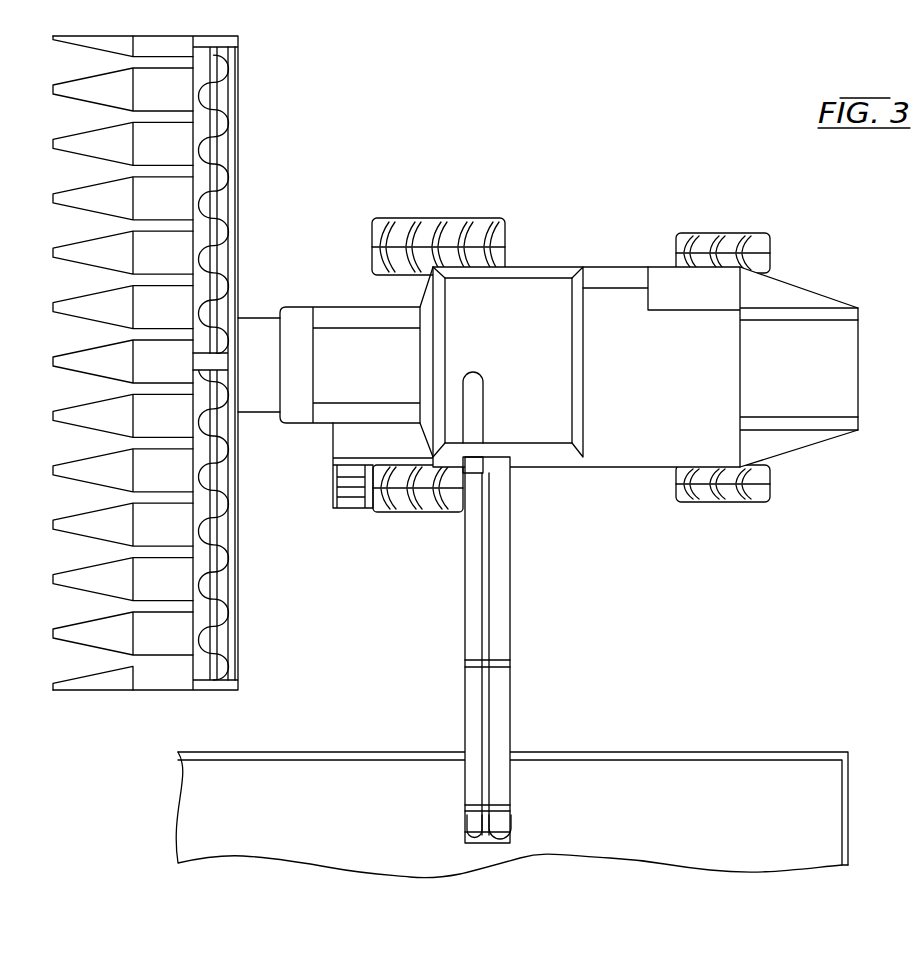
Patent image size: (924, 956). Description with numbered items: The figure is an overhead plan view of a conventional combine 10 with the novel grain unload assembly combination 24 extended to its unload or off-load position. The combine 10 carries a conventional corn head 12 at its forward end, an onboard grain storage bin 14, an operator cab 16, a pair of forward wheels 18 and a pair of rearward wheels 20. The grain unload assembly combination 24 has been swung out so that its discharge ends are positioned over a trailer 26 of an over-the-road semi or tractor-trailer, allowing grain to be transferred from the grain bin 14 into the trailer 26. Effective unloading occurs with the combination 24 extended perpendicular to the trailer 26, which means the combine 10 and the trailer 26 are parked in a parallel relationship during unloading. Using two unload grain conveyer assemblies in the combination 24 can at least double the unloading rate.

The combine 10 is at (517, 510).
The corn head 12 is at (238, 113).
The onboard grain storage bin 14 is at (666, 388).
The operator cab 16 is at (347, 312).
The forward wheels 18 is at (427, 220).
The rearward wheels 20 is at (724, 233).
The grain unload assembly combination 24 is at (527, 623).
The trailer 26 is at (707, 755).